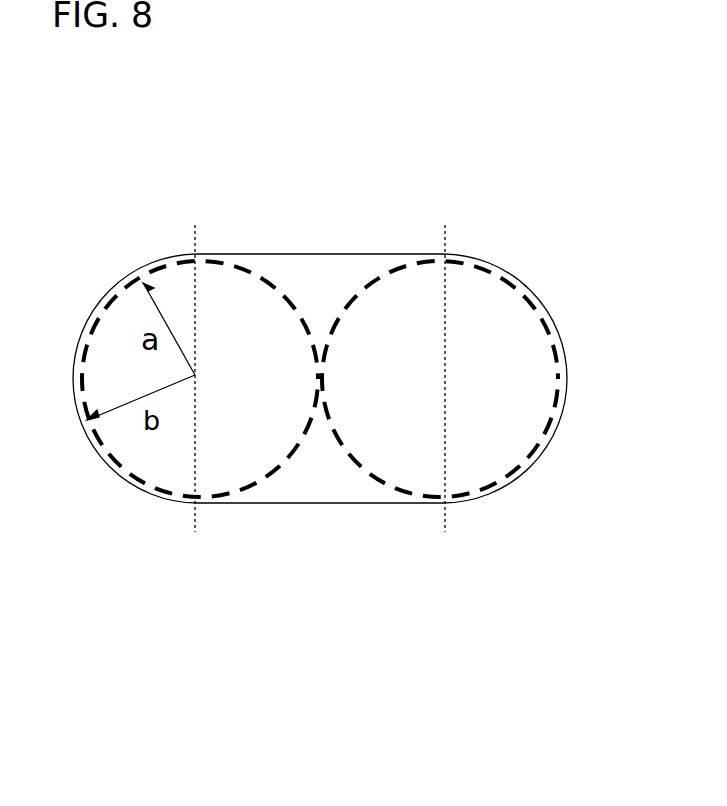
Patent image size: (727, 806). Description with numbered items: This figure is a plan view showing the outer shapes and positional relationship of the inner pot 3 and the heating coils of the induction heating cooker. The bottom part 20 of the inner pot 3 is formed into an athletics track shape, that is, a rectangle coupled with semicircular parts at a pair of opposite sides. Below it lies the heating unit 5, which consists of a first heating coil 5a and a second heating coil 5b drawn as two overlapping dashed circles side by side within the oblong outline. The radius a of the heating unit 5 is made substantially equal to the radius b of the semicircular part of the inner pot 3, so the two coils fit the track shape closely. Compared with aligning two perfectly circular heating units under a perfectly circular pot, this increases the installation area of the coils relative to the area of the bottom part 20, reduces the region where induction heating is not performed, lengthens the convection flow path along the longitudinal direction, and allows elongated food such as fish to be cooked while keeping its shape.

The inner pot 3 is at (528, 292).
The bottom part 20 is at (313, 285).
The heating unit 5 is at (432, 620).
The first heating coil 5a is at (253, 488).
The second heating coil 5b is at (373, 478).